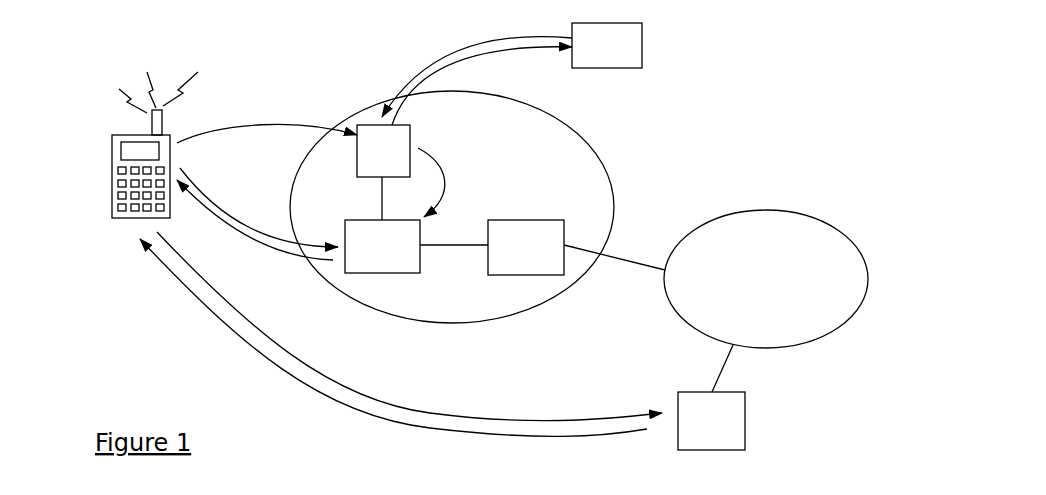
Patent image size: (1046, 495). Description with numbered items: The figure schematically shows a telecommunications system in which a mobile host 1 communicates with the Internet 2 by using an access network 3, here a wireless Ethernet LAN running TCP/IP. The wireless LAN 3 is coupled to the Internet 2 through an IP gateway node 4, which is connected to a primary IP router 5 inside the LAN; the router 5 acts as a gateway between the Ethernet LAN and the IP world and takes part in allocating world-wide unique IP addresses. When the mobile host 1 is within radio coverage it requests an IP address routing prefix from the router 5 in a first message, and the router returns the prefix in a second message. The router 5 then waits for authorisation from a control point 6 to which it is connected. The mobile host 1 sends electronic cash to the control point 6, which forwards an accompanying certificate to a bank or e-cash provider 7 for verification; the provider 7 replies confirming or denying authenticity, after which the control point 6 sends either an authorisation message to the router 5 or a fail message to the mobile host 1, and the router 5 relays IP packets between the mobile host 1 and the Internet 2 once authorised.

The mobile host 1 is at (110, 165).
The Internet 2 is at (800, 212).
The access network 3 is at (593, 143).
The IP gateway node 4 is at (527, 220).
The primary IP router 5 is at (350, 272).
The control point 6 is at (410, 128).
The bank or e-cash provider 7 is at (642, 43).